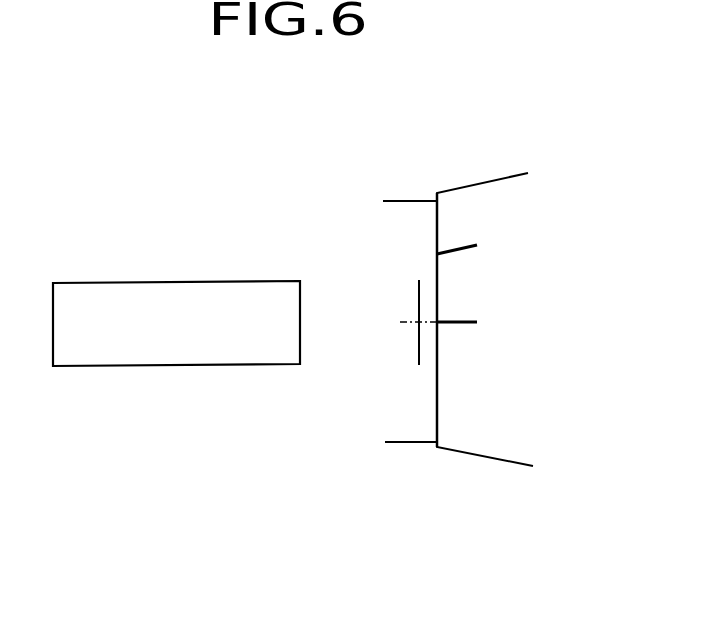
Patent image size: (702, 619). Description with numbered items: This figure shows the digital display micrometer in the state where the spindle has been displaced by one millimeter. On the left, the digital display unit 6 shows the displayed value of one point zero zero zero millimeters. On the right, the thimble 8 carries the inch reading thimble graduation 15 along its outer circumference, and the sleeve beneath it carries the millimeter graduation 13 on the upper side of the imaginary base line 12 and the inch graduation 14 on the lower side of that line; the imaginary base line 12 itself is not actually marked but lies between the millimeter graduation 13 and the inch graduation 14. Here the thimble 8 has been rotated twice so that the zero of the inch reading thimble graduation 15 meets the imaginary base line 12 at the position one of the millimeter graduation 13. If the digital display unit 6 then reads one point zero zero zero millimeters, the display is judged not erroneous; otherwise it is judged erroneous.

The digital display unit 6 is at (87, 283).
The thimble 8 is at (500, 449).
The imaginary base line 12 is at (408, 322).
The millimeter graduation 13 is at (416, 300).
The inch graduation 14 is at (416, 347).
The inch reading thimble graduation 15 is at (469, 199).